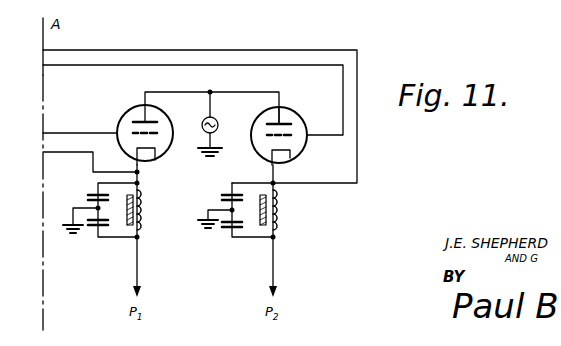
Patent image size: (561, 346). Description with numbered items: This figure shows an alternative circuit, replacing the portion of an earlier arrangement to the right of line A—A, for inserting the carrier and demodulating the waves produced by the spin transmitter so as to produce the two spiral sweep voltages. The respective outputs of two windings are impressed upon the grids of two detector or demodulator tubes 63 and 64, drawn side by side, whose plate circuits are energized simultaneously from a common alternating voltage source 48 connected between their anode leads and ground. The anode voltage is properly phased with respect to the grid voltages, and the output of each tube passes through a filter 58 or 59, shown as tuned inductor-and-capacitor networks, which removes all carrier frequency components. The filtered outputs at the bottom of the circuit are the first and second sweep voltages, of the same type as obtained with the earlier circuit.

The alternating voltage source 48 is at (218, 124).
The filter 58 is at (116, 216).
The filter 59 is at (247, 216).
The detector or demodulator tube 63 is at (155, 160).
The detector or demodulator tube 64 is at (298, 153).